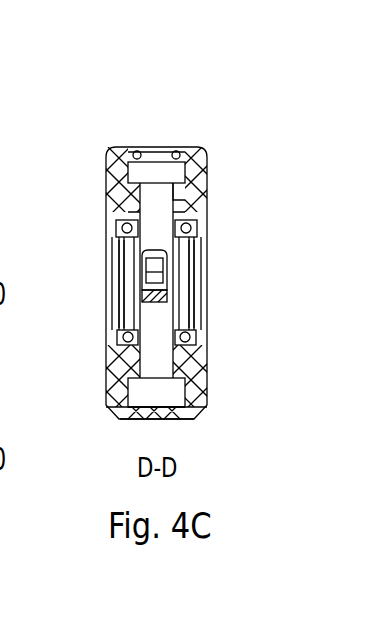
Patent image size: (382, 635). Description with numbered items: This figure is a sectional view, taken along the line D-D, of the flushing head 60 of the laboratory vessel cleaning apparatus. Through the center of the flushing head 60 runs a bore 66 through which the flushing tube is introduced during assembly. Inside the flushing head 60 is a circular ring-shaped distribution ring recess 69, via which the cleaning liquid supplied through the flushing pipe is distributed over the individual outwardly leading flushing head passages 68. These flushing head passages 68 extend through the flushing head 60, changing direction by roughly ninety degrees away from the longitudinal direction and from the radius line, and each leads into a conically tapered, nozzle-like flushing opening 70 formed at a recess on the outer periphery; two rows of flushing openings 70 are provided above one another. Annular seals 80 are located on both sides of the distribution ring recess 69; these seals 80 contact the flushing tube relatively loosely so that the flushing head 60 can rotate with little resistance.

The flushing head 60 is at (121, 150).
The flushing opening 70 is at (181, 150).
The flushing head passage 68 is at (130, 190).
The distribution ring recess 69 is at (118, 247).
The bore 66 is at (107, 293).
The annular seal 80 is at (110, 396).